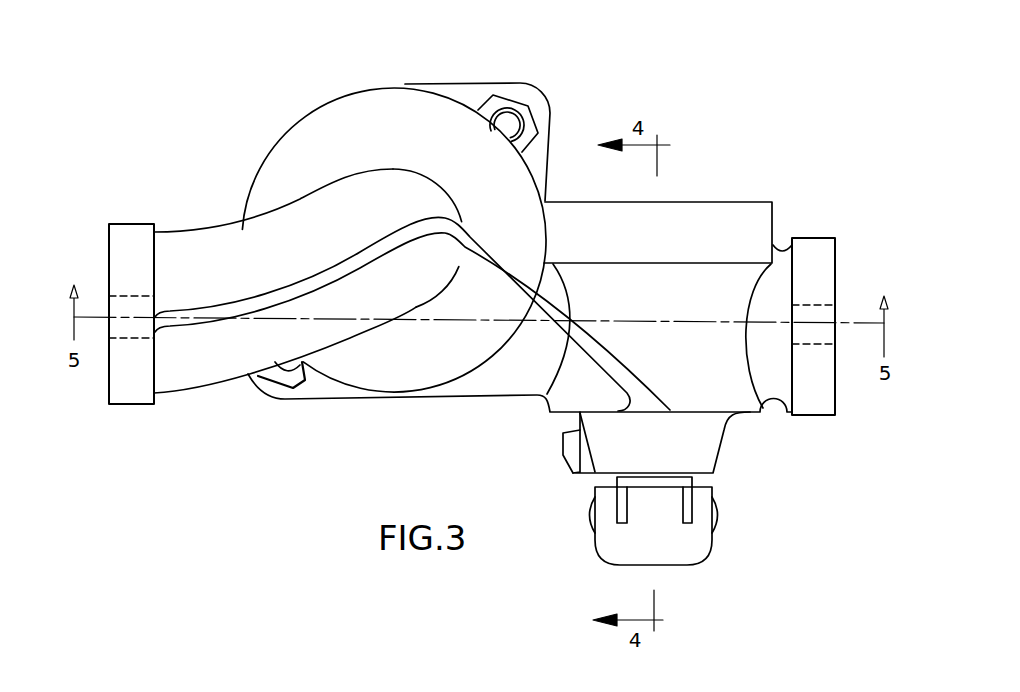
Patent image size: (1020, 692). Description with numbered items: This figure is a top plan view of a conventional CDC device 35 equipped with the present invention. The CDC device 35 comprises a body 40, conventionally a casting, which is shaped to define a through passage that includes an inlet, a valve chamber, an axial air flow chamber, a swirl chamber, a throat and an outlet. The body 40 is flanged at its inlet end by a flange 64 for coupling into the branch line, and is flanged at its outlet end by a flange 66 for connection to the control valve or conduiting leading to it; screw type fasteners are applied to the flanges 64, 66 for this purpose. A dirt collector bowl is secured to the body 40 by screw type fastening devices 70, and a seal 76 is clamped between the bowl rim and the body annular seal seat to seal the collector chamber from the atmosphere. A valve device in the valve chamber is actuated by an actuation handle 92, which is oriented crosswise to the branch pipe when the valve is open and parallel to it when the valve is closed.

The CDC device 35 is at (220, 390).
The body 40 is at (550, 289).
The inlet flange 64 is at (814, 250).
The outlet flange 66 is at (130, 245).
The screw type fastening devices 70 is at (292, 396).
The seal 76 is at (545, 116).
The actuation handle 92 is at (690, 552).